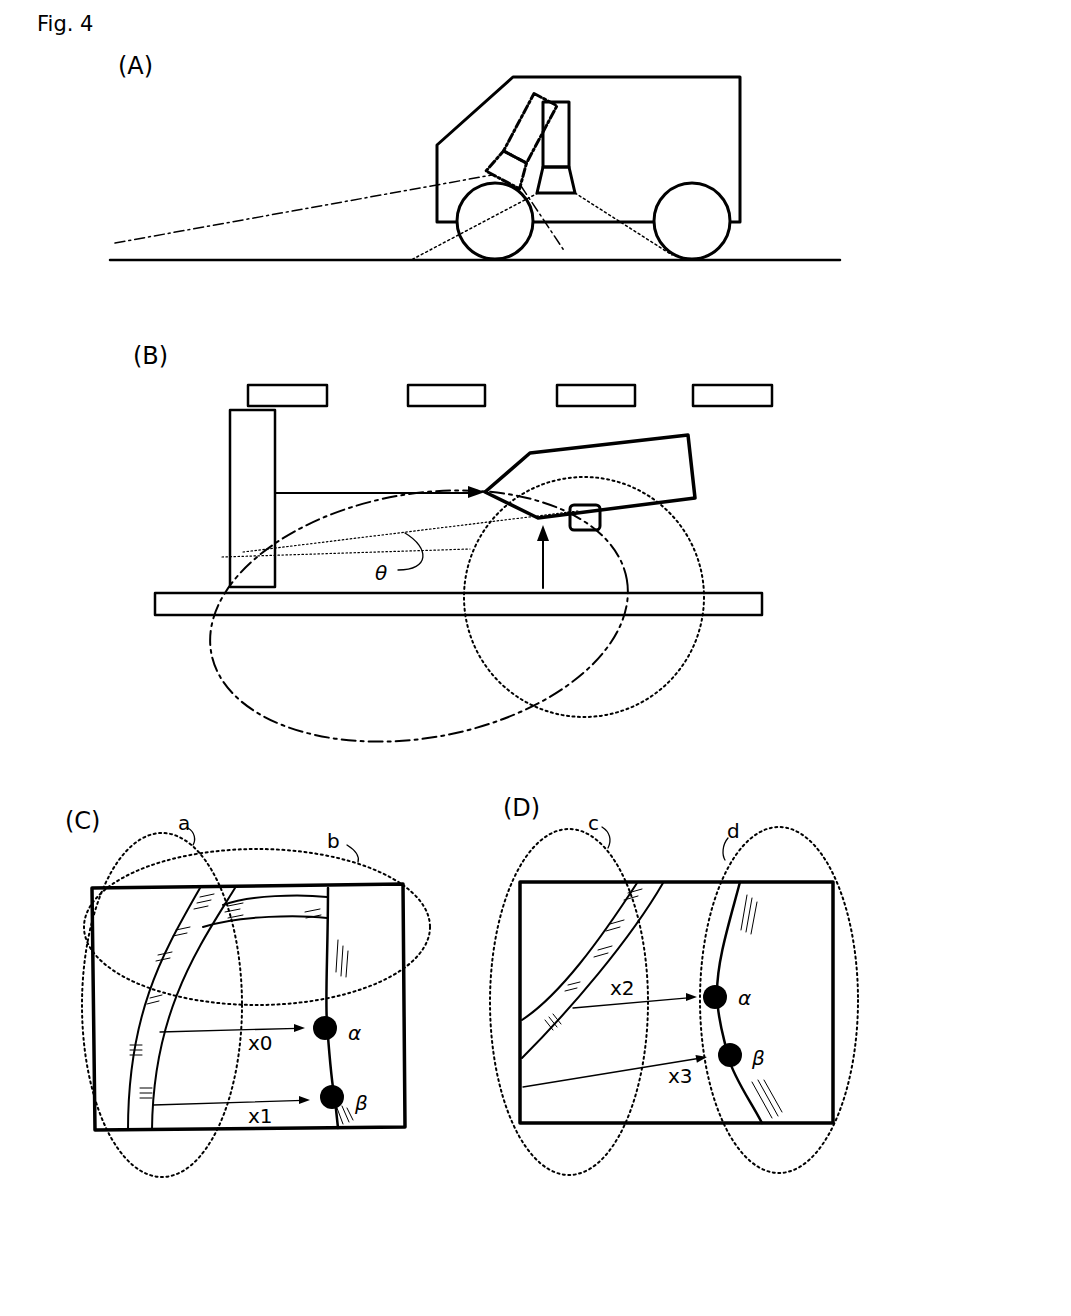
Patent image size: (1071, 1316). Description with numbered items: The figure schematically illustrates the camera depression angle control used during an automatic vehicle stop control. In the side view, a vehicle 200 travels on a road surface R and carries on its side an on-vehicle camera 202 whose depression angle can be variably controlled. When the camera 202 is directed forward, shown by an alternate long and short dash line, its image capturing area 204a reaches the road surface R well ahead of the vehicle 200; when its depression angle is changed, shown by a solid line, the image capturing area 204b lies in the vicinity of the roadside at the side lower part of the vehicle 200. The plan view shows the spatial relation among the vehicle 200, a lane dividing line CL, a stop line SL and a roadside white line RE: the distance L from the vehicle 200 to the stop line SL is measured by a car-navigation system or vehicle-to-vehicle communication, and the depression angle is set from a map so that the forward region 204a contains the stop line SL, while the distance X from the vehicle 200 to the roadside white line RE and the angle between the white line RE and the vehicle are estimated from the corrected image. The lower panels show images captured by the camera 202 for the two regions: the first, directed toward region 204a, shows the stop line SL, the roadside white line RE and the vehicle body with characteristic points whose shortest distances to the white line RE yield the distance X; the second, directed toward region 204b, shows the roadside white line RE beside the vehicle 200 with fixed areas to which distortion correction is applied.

The vehicle 200 is at (753, 106).
The on-vehicle camera 202 is at (520, 130).
The image capturing area of a camera 204a is at (333, 240).
The image capturing area of a camera 204b is at (579, 272).
The road surface R is at (172, 277).
The lane dividing line CL is at (290, 376).
The stop line SL is at (248, 508).
The roadside white line RE is at (195, 598).
The distance to the stop line L is at (380, 482).
The distance from the vehicle to the roadside X is at (552, 556).